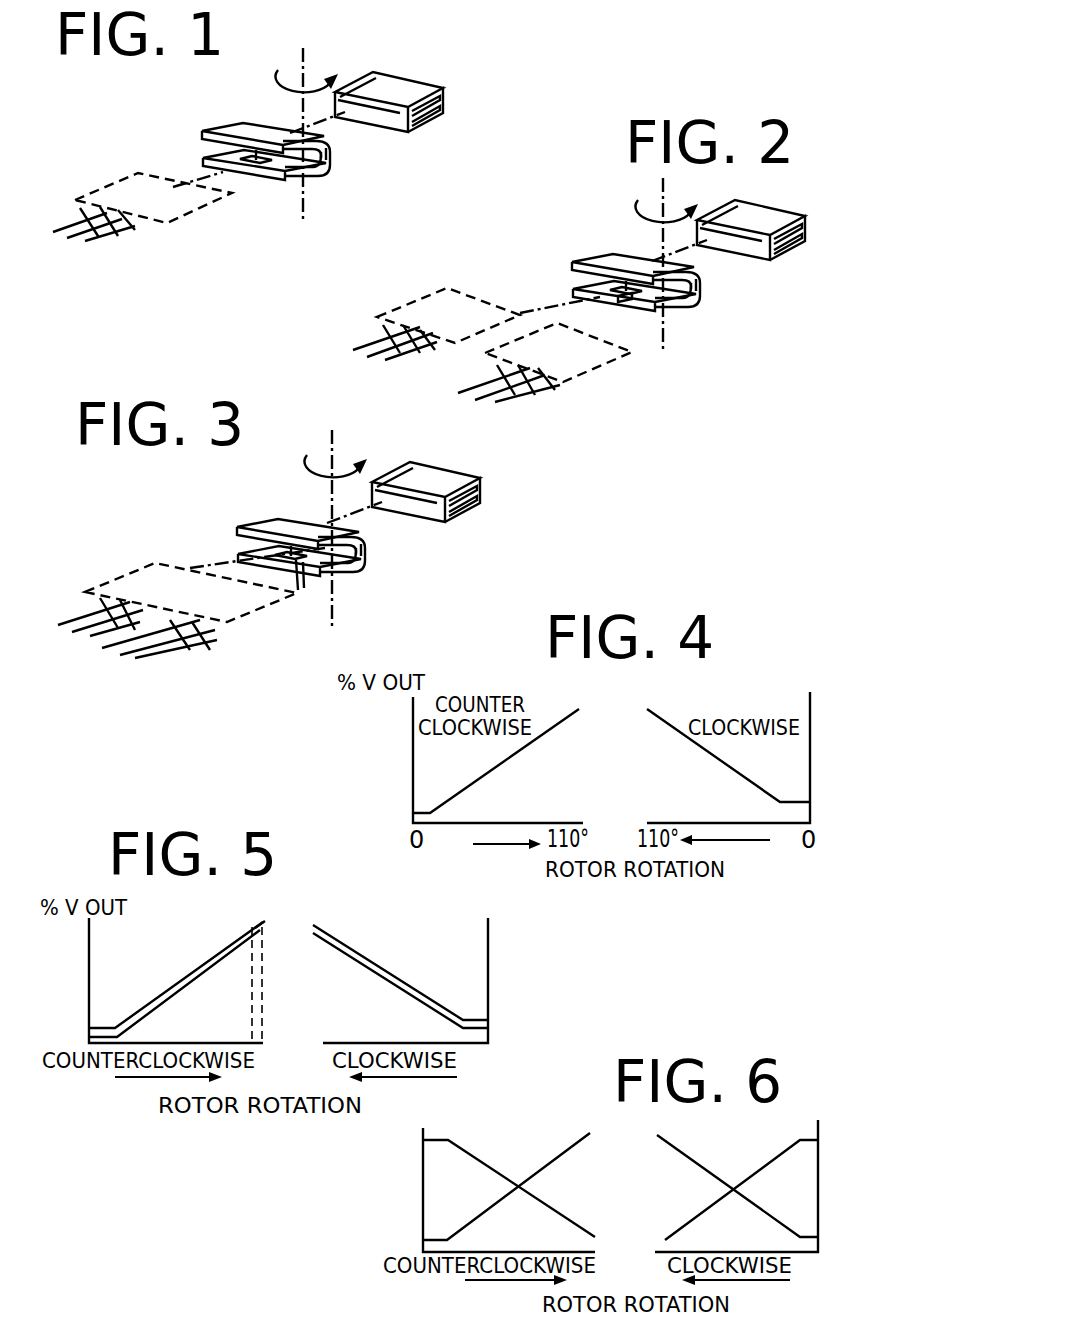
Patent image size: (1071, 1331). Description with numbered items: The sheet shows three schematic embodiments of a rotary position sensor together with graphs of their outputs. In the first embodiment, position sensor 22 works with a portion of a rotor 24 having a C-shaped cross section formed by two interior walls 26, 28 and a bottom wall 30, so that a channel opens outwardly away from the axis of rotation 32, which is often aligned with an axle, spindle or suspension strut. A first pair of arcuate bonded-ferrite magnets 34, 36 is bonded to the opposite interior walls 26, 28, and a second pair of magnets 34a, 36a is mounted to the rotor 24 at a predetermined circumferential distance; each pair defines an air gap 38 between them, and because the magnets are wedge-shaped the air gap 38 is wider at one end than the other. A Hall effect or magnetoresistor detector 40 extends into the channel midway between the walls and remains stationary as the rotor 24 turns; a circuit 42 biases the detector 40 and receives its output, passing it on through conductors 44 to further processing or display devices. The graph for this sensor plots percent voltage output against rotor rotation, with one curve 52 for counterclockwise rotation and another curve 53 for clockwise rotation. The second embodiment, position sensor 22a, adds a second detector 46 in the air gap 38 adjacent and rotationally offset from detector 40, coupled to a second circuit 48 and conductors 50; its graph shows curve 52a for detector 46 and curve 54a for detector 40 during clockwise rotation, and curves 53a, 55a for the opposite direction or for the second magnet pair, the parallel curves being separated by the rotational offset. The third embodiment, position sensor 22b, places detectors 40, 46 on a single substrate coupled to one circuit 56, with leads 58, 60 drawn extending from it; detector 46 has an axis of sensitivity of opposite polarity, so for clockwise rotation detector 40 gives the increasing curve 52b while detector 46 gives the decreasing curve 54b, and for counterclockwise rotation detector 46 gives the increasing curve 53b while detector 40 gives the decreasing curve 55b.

In FIG. 1, the position sensor 22 is at (146, 130).
In FIG. 2, the position sensor 22a is at (498, 262).
In FIG. 3, the position sensor 22b is at (216, 494).
In FIG. 1, the rotor 24 is at (403, 90).
In FIG. 2, the rotor 24 is at (760, 218).
In FIG. 3, the rotor 24 is at (427, 476).
In FIG. 1, the interior wall 26 is at (299, 150).
In FIG. 2, the interior wall 26 is at (663, 283).
In FIG. 3, the interior wall 26 is at (352, 535).
In FIG. 1, the interior wall 28 is at (303, 167).
In FIG. 2, the interior wall 28 is at (660, 297).
In FIG. 3, the interior wall 28 is at (342, 560).
In FIG. 1, the bottom wall 30 is at (327, 153).
In FIG. 2, the bottom wall 30 is at (690, 273).
In FIG. 1, the axis of rotation 32 is at (303, 60).
In FIG. 2, the axis of rotation 32 is at (665, 185).
In FIG. 3, the axis of rotation 32 is at (335, 440).
In FIG. 1, the magnet 34 is at (267, 148).
In FIG. 2, the magnet 34 is at (615, 273).
In FIG. 3, the magnet 34 is at (297, 543).
In FIG. 1, the magnet 34a is at (443, 100).
In FIG. 2, the magnet 34a is at (805, 236).
In FIG. 3, the magnet 34a is at (480, 492).
In FIG. 1, the magnet 36 is at (267, 178).
In FIG. 2, the magnet 36 is at (646, 302).
In FIG. 3, the magnet 36 is at (308, 570).
In FIG. 1, the magnet 36a is at (443, 115).
In FIG. 2, the magnet 36a is at (800, 243).
In FIG. 3, the magnet 36a is at (480, 507).
In FIG. 1, the air gap 38 is at (195, 121).
In FIG. 2, the air gap 38 is at (570, 265).
In FIG. 3, the air gap 38 is at (237, 528).
In FIG. 1, the detector 40 is at (254, 164).
In FIG. 2, the detector 40 is at (603, 277).
In FIG. 3, the detector 40 is at (273, 547).
In FIG. 1, the circuit 42 is at (160, 208).
In FIG. 2, the circuit 42 is at (465, 325).
In FIG. 1, the conductors 44 is at (125, 238).
In FIG. 2, the conductors 44 is at (373, 333).
In FIG. 2, the second detector 46 is at (621, 300).
In FIG. 3, the second detector 46 is at (300, 598).
In FIG. 2, the second circuit 48 is at (568, 362).
In FIG. 2, the conductors 50 is at (527, 388).
In FIG. 4, the counterclockwise output curve 52 is at (500, 763).
In FIG. 4, the clockwise output curve 53 is at (710, 758).
In FIG. 5, the curve 52a is at (167, 985).
In FIG. 5, the curve 53a is at (358, 949).
In FIG. 5, the curve 54a is at (187, 983).
In FIG. 5, the curve 55a is at (362, 968).
In FIG. 6, the curve 52b is at (490, 1170).
In FIG. 6, the curve 53b is at (698, 1168).
In FIG. 6, the curve 54b is at (480, 1213).
In FIG. 6, the curve 55b is at (692, 1223).
In FIG. 3, the circuit 56 is at (193, 610).
In FIG. 5, the circuit 56 is at (256, 920).
In FIG. 3, the first sensor leads 58 is at (83, 603).
In FIG. 3, the second sensor leads 60 is at (190, 636).